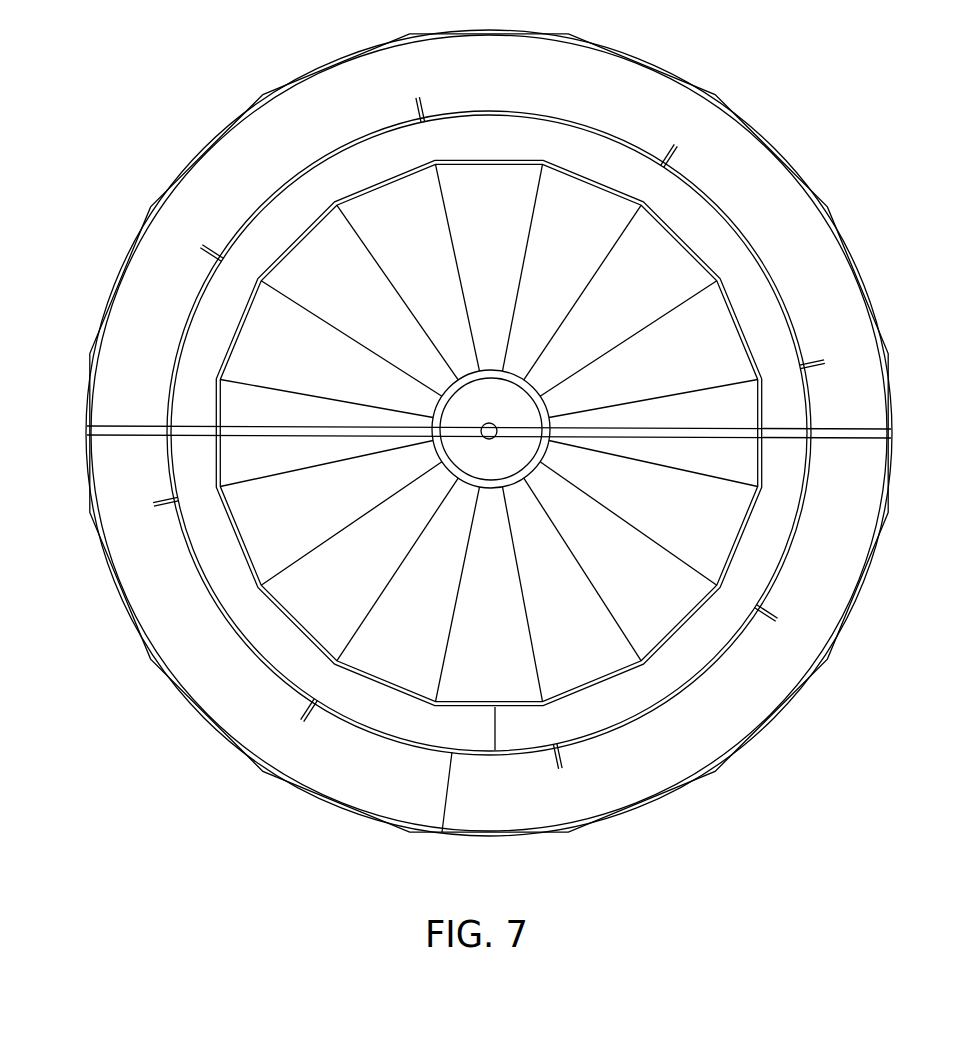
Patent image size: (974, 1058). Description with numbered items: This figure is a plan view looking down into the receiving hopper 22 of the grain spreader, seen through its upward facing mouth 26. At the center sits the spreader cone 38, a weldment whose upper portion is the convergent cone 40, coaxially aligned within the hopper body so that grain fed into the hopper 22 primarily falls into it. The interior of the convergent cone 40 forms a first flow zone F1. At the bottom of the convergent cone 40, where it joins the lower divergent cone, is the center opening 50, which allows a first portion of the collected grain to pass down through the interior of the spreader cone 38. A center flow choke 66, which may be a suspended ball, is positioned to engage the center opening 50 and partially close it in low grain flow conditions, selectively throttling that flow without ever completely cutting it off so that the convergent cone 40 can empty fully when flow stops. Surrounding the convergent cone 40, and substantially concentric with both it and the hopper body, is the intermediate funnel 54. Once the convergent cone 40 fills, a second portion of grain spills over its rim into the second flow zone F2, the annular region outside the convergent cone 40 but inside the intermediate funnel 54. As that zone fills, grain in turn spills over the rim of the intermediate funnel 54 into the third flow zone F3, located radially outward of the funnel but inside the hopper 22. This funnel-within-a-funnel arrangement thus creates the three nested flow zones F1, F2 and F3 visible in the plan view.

The hopper 22 is at (892, 403).
The upward facing mouth 26 is at (587, 408).
The spreader cone 38 is at (750, 523).
The convergent cone 40 is at (748, 338).
The center opening 50 is at (518, 402).
The intermediate funnel 54 is at (733, 653).
The center flow choke 66 is at (543, 415).
The first flow zone F1 is at (368, 573).
The second flow zone F2 is at (297, 650).
The third flow zone F3 is at (252, 710).